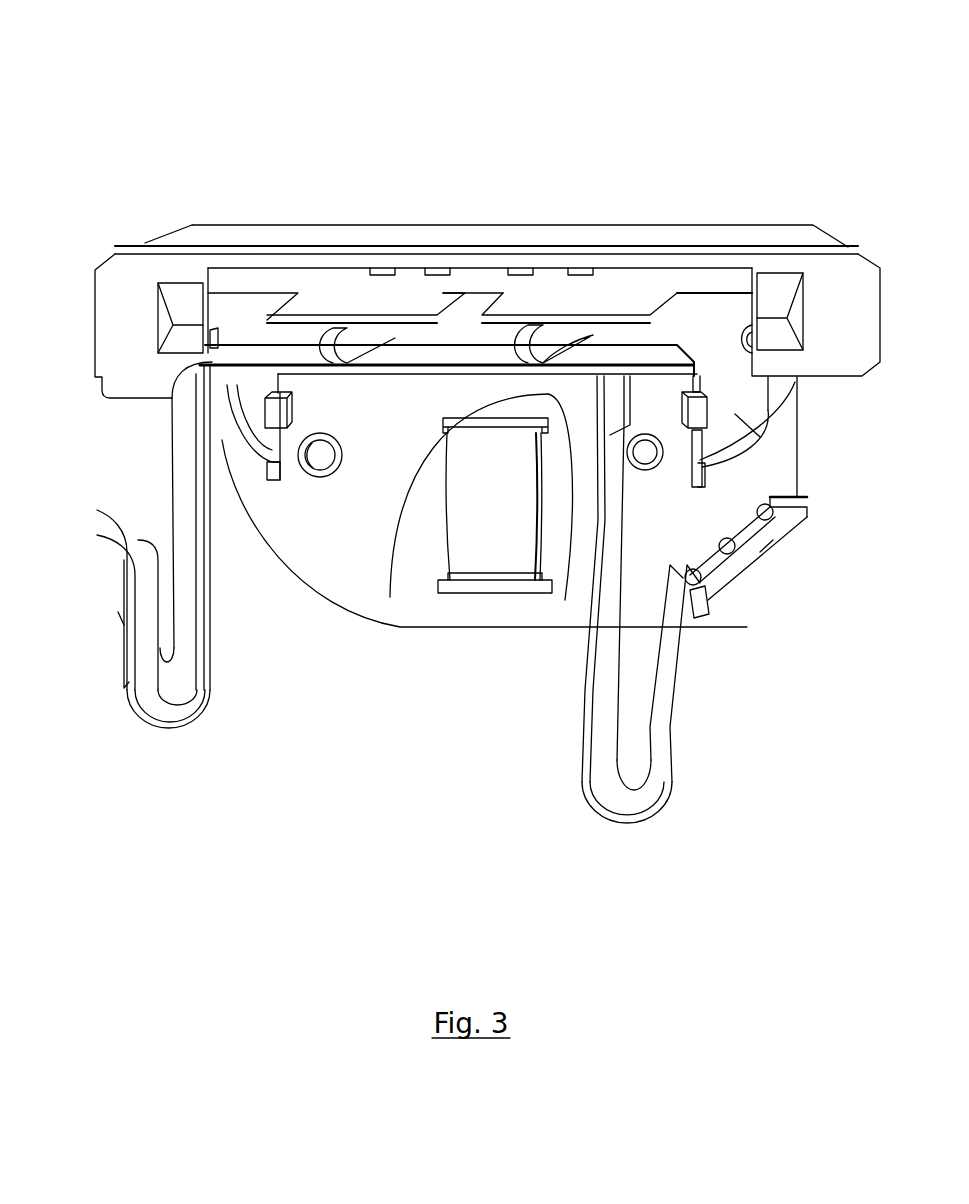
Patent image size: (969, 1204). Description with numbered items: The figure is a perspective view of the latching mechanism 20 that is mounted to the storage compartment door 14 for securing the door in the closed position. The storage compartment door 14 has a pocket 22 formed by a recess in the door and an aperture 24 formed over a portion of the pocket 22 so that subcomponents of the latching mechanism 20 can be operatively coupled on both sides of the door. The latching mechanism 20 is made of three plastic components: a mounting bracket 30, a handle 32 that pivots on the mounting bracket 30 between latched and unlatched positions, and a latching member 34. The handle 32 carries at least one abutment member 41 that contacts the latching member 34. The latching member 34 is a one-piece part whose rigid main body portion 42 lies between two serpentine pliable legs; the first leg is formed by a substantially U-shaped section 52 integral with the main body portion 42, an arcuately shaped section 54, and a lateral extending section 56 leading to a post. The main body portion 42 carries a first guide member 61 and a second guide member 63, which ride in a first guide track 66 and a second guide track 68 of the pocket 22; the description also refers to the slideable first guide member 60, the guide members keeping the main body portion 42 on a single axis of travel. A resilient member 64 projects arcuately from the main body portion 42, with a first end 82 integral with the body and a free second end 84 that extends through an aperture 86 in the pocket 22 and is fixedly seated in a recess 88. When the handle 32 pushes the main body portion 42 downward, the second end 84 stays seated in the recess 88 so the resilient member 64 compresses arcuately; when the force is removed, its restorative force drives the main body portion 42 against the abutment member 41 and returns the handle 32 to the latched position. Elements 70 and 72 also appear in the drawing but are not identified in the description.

The storage compartment door 14 is at (139, 43).
The latching mechanism 20 is at (728, 170).
The pocket 22 is at (300, 545).
The aperture 24 is at (735, 414).
The mounting bracket 30 is at (831, 303).
The handle 32 is at (676, 328).
The latching member 34 is at (412, 355).
The abutment member 41 is at (333, 345).
The main body portion 42 is at (483, 350).
The substantially U-shaped section 52 is at (167, 728).
The arcuately shaped section 54 is at (122, 535).
The lateral extending section 56 is at (637, 810).
The first guide member 60 is at (718, 565).
The first guide member 61 is at (276, 412).
The second guide member 63 is at (703, 403).
The resilient member 64 is at (468, 517).
The first guide track 66 is at (270, 482).
The second guide track 68 is at (773, 540).
The strap end 70 is at (120, 617).
The strap end 72 is at (697, 600).
The first end 82 is at (565, 600).
The second end 84 is at (477, 593).
The aperture 86 is at (390, 597).
The recess 88 is at (523, 593).